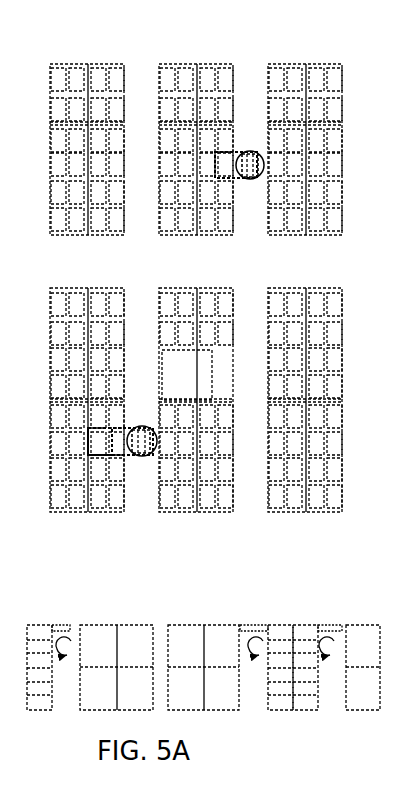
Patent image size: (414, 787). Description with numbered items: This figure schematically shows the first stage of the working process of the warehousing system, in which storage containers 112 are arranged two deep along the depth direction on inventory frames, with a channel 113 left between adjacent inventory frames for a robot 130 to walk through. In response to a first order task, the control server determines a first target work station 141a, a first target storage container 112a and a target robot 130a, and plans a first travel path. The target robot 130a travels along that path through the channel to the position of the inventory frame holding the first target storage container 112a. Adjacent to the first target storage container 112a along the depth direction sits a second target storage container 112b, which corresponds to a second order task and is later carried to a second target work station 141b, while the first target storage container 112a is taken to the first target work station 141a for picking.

The channel 113 is at (143, 80).
The storage container 112 is at (222, 153).
The robot 130 is at (250, 181).
The first target storage container 112a is at (118, 428).
The second target storage container 112b is at (88, 442).
The target robot 130a is at (142, 458).
The first target work station 141a is at (66, 623).
The second target work station 141b is at (331, 623).